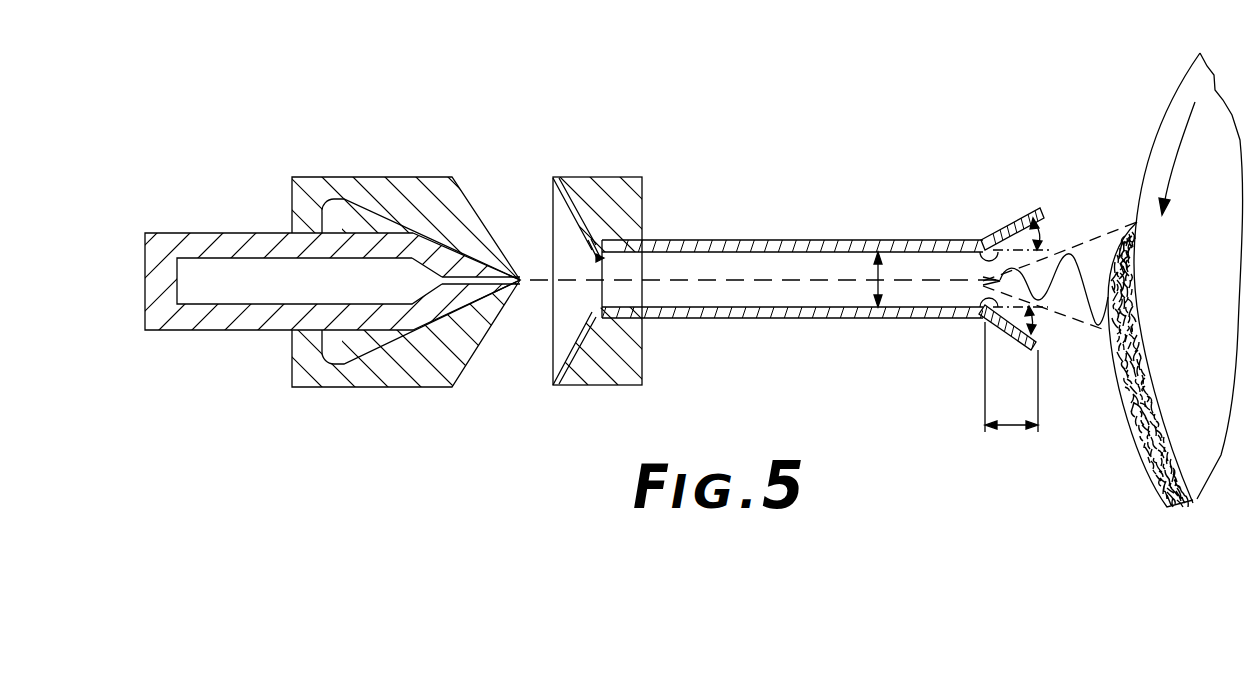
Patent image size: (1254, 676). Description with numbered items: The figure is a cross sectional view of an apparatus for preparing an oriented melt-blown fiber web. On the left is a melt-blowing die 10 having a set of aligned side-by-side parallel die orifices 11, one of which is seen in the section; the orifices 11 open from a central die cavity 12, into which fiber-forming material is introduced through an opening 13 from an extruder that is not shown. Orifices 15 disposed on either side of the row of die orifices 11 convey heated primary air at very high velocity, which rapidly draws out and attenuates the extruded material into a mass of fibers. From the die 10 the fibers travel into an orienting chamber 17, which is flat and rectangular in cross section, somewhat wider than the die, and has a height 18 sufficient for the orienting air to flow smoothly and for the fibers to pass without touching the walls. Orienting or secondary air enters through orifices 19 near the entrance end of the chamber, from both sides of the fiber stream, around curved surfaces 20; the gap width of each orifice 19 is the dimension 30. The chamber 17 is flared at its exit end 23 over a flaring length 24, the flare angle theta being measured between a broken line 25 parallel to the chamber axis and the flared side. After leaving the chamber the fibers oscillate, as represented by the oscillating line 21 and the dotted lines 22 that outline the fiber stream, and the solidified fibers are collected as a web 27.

The die 10 is at (406, 170).
The die orifices 11 is at (527, 287).
The central die cavity 12 is at (356, 297).
The opening 13 is at (220, 250).
The orifices 15 is at (487, 257).
The orienting chamber 17 is at (762, 240).
The height of the orienting chamber 18 is at (881, 264).
The orifices 19 is at (555, 178).
The curved surfaces 20 is at (598, 247).
The oscillating line 21 is at (1073, 257).
The dotted lines 22 is at (1133, 222).
The exit end 23 is at (1043, 214).
The flaring length 24 is at (1012, 432).
The broken line 25 is at (982, 246).
The web 27 is at (1152, 477).
The gap width of the orifice 30 is at (578, 268).